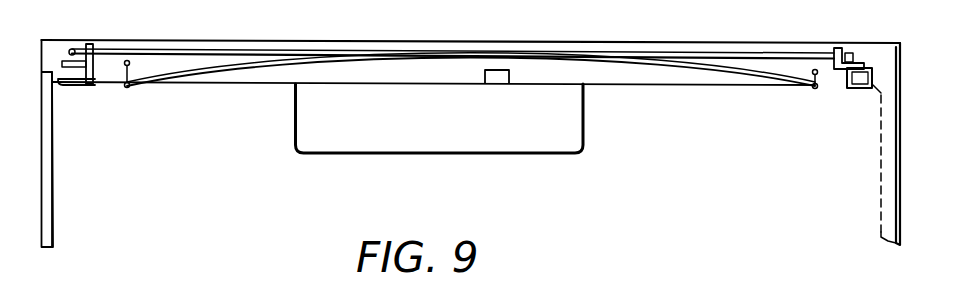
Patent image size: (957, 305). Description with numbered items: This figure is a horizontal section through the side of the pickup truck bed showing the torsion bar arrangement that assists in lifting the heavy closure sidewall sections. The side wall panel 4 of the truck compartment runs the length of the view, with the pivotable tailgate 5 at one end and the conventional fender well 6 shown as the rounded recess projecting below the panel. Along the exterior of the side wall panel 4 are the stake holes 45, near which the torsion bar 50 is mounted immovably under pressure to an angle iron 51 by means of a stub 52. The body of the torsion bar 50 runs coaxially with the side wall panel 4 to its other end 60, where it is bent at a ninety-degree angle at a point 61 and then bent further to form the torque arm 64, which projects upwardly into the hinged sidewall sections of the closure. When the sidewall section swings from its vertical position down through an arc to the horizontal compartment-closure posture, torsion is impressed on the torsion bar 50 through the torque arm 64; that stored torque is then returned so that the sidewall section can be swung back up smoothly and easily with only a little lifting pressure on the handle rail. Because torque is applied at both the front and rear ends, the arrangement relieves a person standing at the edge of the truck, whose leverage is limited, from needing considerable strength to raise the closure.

The side wall panel 4 is at (471, 125).
The pivotable tailgate 5 is at (892, 172).
The fender well 6 is at (513, 133).
The stake hole 45 is at (70, 86).
The torsion bar 50 is at (207, 52).
The angle iron 51 is at (840, 48).
The stub 52 is at (73, 49).
The other end of torsion bar 60 is at (164, 84).
The bend point 61 is at (127, 88).
The torque arm 64 is at (129, 61).